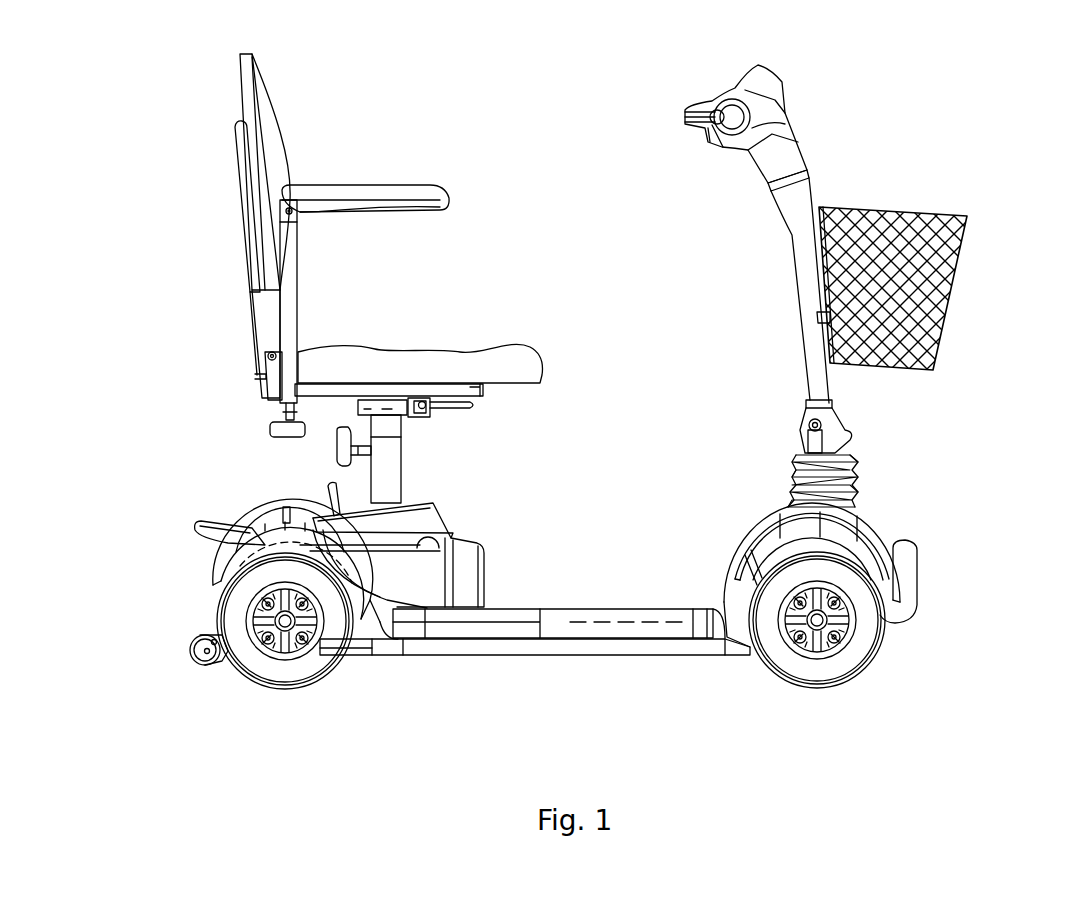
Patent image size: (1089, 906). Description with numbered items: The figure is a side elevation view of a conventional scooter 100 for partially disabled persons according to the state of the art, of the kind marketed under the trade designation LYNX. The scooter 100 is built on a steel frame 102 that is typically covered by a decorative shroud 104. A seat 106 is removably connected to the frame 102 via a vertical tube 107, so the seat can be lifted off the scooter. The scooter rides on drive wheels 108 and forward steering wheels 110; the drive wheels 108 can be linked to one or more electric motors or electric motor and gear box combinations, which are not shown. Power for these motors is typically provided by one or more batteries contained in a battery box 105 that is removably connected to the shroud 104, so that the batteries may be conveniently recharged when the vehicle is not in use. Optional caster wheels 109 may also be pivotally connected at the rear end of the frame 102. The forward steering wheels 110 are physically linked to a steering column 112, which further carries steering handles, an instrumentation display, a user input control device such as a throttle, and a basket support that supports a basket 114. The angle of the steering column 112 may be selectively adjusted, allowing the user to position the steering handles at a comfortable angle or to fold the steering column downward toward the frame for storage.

The scooter 100 is at (990, 101).
The steel frame 102 is at (603, 655).
The decorative shroud 104 is at (603, 610).
The battery box 105 is at (484, 541).
The seat 106 is at (265, 95).
The vertical tube 107 is at (405, 468).
The drive wheels 108 is at (312, 683).
The caster wheels 109 is at (193, 638).
The forward steering wheels 110 is at (845, 683).
The steering column 112 is at (792, 266).
The basket 114 is at (960, 250).